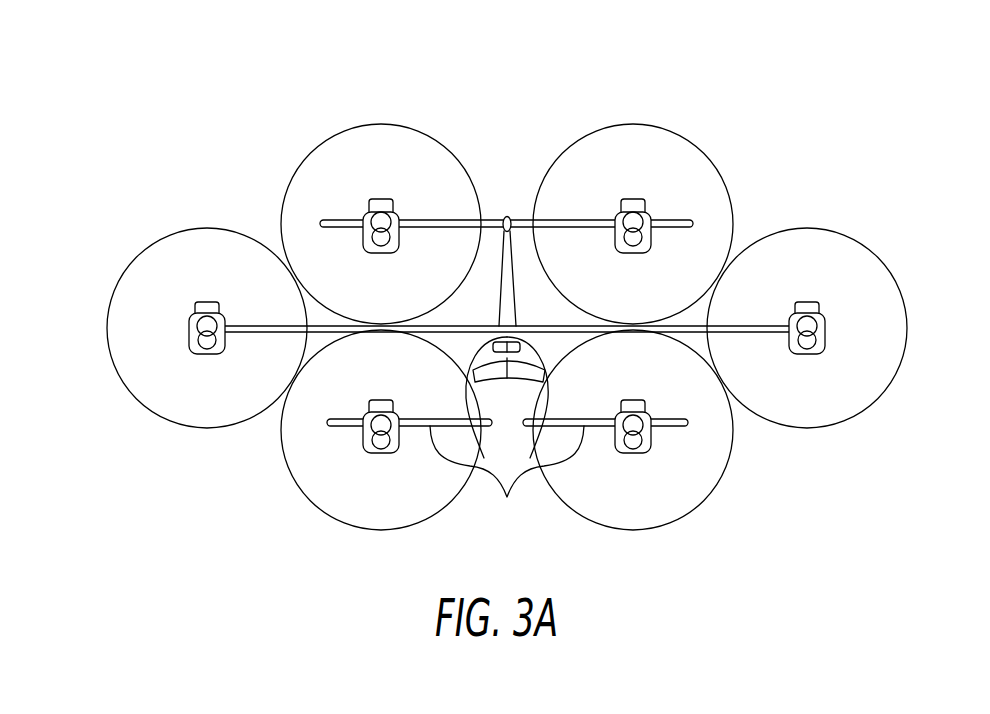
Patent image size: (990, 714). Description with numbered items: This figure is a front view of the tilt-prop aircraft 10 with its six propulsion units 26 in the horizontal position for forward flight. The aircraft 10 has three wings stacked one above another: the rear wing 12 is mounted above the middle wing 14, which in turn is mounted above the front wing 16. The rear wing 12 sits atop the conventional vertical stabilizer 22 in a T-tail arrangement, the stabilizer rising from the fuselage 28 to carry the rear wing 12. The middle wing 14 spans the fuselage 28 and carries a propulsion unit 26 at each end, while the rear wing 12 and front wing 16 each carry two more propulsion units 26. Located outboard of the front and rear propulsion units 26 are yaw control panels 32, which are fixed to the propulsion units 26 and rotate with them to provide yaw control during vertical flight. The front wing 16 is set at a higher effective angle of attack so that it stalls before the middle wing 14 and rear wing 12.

The aircraft 10 is at (868, 95).
The rear wing 12 is at (492, 222).
The middle wing 14 is at (678, 326).
The front wing 16 is at (507, 492).
The vertical stabilizer 22 is at (513, 270).
The propulsion units 26 is at (396, 215).
The fuselage 28 is at (510, 402).
The yaw control panels 32 is at (346, 219).